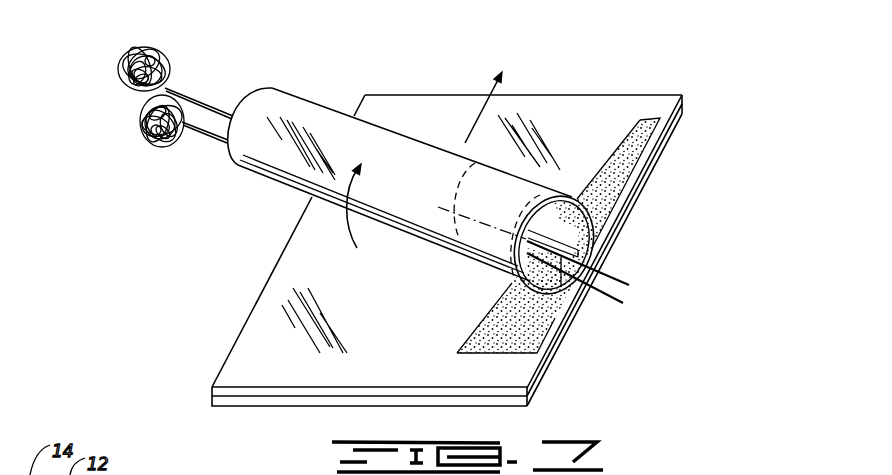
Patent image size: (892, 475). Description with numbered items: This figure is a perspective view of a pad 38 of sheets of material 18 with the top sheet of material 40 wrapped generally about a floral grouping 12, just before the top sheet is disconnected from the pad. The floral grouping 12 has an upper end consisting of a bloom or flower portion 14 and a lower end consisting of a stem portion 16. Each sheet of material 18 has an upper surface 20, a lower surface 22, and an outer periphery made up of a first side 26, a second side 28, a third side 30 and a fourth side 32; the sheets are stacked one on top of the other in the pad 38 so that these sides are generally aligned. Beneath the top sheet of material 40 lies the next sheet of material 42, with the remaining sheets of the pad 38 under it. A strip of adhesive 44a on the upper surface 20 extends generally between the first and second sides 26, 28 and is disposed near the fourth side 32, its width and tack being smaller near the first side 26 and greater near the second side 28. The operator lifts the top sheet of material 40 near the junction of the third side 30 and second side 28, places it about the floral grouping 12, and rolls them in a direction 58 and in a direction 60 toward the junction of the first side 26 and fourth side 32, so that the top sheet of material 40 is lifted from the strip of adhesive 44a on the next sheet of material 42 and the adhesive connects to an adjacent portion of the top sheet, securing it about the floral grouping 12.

The floral grouping 12 is at (173, 62).
The flower portion 14 is at (125, 47).
The stem portion 16 is at (607, 300).
The sheet of material 18 is at (406, 82).
The upper surface 20 is at (565, 105).
The lower surface 22 is at (261, 108).
The first side 26 is at (412, 95).
The second side 28 is at (563, 303).
The third side 30 is at (355, 115).
The fourth side 32 is at (650, 153).
The pad 38 is at (693, 102).
The top sheet of material 40 is at (230, 147).
The next sheet of material 42 is at (210, 387).
The strip of adhesive 44a is at (625, 110).
The rolling direction 58 is at (350, 227).
The rolling direction 60 is at (478, 116).